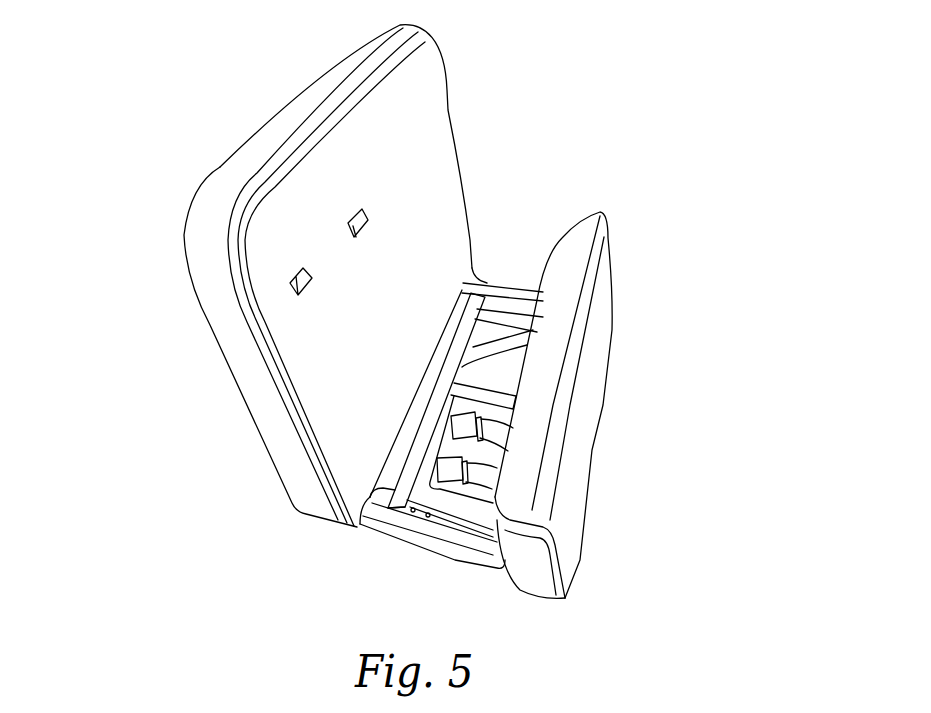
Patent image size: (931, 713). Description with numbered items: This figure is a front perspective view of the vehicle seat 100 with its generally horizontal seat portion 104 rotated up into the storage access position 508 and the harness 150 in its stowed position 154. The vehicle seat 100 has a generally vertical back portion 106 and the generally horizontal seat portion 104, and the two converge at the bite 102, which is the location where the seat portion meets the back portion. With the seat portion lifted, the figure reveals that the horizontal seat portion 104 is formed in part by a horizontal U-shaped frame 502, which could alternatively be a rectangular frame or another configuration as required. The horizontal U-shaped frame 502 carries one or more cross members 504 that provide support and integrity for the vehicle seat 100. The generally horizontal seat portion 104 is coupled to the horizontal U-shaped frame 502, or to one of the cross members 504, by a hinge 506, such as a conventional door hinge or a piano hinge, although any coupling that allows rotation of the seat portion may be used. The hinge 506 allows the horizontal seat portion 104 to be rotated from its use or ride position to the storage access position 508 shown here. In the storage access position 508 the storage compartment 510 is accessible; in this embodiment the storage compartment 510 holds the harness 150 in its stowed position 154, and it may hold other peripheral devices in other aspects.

The vehicle seat 100 is at (667, 181).
The bite 102 is at (480, 272).
The horizontal seat portion 104 is at (590, 345).
The vertical back portion 106 is at (428, 107).
The harness 150 is at (427, 477).
The stowed position 154 is at (147, 483).
The horizontal U-shaped frame 502 is at (393, 537).
The cross members 504 is at (478, 362).
The hinge 506 is at (483, 588).
The storage access position 508 is at (692, 470).
The storage compartment 510 is at (468, 495).